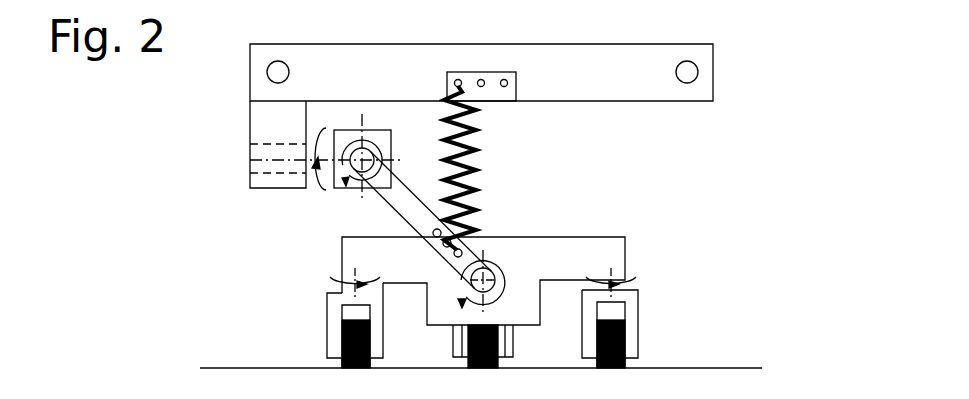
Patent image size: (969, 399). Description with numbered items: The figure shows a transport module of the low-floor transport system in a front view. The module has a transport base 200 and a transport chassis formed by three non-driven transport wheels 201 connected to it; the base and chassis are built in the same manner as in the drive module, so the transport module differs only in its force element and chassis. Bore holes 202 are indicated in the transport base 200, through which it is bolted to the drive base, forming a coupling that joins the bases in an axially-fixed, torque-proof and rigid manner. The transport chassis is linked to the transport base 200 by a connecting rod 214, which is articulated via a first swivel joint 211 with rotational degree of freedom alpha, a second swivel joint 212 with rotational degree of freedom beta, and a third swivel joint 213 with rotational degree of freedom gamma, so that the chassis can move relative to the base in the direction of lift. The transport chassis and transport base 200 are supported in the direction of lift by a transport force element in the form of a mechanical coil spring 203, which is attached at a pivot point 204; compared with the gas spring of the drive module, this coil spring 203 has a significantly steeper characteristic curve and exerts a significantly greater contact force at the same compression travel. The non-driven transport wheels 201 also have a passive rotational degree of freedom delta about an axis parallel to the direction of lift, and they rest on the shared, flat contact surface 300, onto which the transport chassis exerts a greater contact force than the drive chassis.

The transport base 200 is at (626, 88).
The transport wheel 201 is at (340, 366).
The bore hole 202 is at (289, 70).
The coil spring 203 is at (475, 212).
The pivot point 204 is at (459, 80).
The first swivel joint 211 is at (246, 160).
The second swivel joint 212 is at (350, 173).
The third swivel joint 213 is at (500, 265).
The connecting rod 214 is at (380, 237).
The contact surface 300 is at (760, 368).